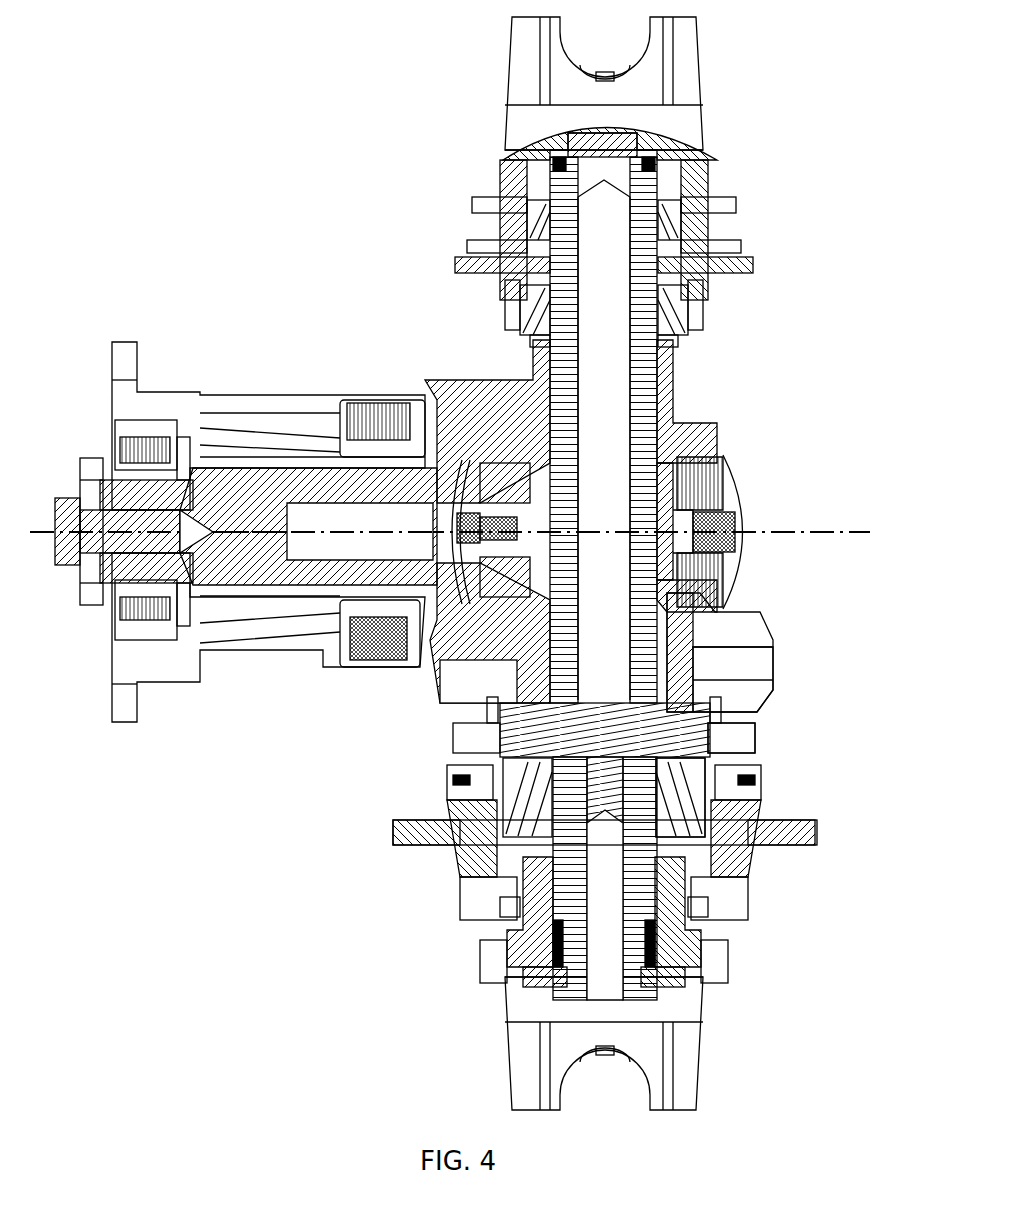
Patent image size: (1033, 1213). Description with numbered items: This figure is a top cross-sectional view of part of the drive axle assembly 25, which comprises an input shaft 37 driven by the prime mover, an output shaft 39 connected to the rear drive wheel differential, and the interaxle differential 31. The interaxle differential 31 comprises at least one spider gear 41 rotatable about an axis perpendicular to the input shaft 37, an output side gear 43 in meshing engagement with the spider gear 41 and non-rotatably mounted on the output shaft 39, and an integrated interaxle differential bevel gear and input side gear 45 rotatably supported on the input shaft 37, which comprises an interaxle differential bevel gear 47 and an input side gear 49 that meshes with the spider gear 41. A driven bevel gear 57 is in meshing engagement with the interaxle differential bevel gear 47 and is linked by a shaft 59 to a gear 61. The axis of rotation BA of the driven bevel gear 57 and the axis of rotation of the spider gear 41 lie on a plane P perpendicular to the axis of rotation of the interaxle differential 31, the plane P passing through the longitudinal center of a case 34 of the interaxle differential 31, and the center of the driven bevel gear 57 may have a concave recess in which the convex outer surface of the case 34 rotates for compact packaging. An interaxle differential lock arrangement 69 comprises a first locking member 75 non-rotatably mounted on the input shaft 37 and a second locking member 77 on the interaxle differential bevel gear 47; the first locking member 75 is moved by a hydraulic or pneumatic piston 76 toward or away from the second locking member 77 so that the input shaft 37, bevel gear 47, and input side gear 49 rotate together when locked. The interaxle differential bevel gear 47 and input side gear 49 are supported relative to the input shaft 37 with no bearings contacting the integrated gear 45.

The drive axle assembly 25 is at (372, 789).
The interaxle differential 31 is at (752, 470).
The case 34 is at (745, 560).
The input shaft 37 is at (633, 853).
The output shaft 39 is at (643, 218).
The spider gear 41 is at (500, 490).
The output side gear 43 is at (705, 455).
The integrated interaxle differential bevel gear and input side gear 45 is at (745, 640).
The interaxle differential bevel gear 47 is at (763, 658).
The input side gear 49 is at (720, 610).
The driven bevel gear 57 is at (452, 395).
The shaft 59 is at (345, 475).
The gear 61 is at (268, 437).
The interaxle differential lock arrangement 69 is at (455, 726).
The first locking member 75 is at (470, 713).
The hydraulic or pneumatic piston 76 is at (760, 796).
The second locking member 77 is at (745, 713).
The axis of rotation of the driven bevel gear BA is at (408, 530).
The plane P is at (843, 534).